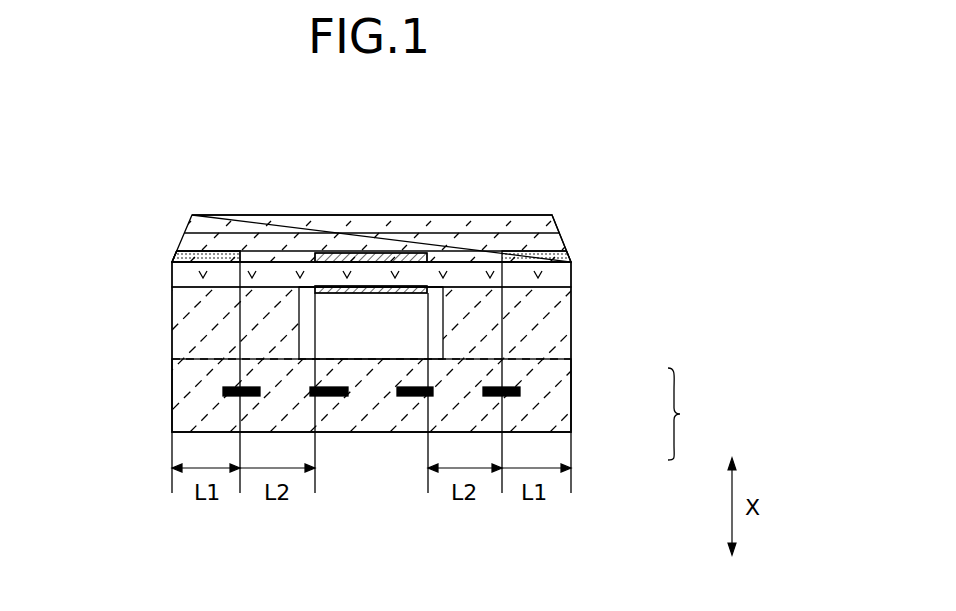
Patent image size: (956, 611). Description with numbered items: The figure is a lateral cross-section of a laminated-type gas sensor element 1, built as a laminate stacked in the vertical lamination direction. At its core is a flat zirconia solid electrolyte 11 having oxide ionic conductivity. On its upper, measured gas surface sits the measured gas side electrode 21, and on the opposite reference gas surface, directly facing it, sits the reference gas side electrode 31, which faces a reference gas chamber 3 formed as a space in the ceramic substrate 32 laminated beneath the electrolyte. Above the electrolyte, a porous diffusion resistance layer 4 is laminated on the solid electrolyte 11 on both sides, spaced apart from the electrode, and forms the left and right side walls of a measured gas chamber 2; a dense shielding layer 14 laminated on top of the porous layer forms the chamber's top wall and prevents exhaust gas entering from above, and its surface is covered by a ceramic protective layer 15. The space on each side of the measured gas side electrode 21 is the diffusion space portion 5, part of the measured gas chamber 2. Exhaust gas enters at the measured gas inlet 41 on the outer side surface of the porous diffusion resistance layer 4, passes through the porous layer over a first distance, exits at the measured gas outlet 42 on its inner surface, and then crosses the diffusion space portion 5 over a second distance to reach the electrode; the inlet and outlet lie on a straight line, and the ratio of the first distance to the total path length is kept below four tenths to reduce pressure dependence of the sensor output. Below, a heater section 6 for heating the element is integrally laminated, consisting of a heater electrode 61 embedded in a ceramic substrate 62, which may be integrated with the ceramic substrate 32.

The gas sensor element 1 is at (484, 195).
The measured gas chamber 2 is at (398, 245).
The measured gas side electrode 21 is at (370, 262).
The reference gas chamber 3 is at (393, 352).
The reference gas side electrode 31 is at (370, 293).
The ceramic substrate 32 is at (545, 335).
The porous diffusion resistance layer 4 is at (207, 258).
The measured gas inlet 41 is at (172, 256).
The measured gas outlet 42 is at (252, 260).
The diffusion space portion 5 is at (297, 270).
The heater section 6 is at (686, 414).
The heater electrode 61 is at (540, 383).
The ceramic substrate 62 is at (548, 412).
The solid electrolyte 11 is at (562, 276).
The shielding layer 14 is at (553, 240).
The protective layer 15 is at (512, 226).